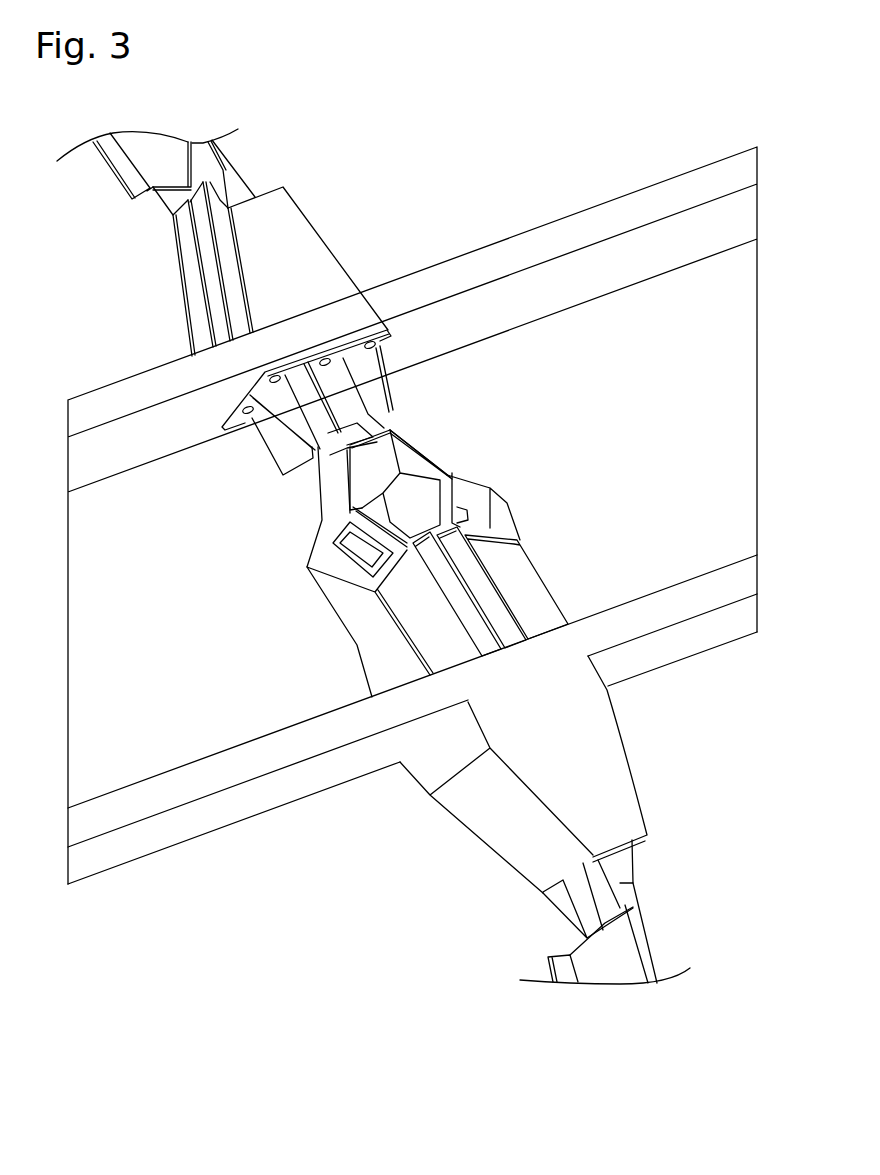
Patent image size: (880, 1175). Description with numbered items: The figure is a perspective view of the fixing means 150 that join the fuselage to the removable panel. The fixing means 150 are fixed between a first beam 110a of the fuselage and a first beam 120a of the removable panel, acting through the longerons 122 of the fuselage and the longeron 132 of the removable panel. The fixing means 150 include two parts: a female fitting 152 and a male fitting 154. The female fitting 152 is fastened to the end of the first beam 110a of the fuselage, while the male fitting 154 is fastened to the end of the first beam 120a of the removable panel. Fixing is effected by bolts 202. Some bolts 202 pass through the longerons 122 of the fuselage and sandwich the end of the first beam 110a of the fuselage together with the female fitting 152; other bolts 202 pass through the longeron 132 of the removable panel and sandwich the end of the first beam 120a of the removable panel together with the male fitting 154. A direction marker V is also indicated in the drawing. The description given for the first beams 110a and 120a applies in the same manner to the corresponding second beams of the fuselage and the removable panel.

The first beam of the fuselage 110a is at (143, 160).
The longeron of the fuselage 122 is at (548, 247).
The longeron of the removable panel 132 is at (692, 618).
The bolts 202 is at (376, 350).
The female fitting 152 is at (250, 466).
The fixing means 150 is at (580, 399).
The vertical direction V is at (452, 440).
The male fitting 154 is at (567, 517).
The first beam of the removable panel 120a is at (647, 943).